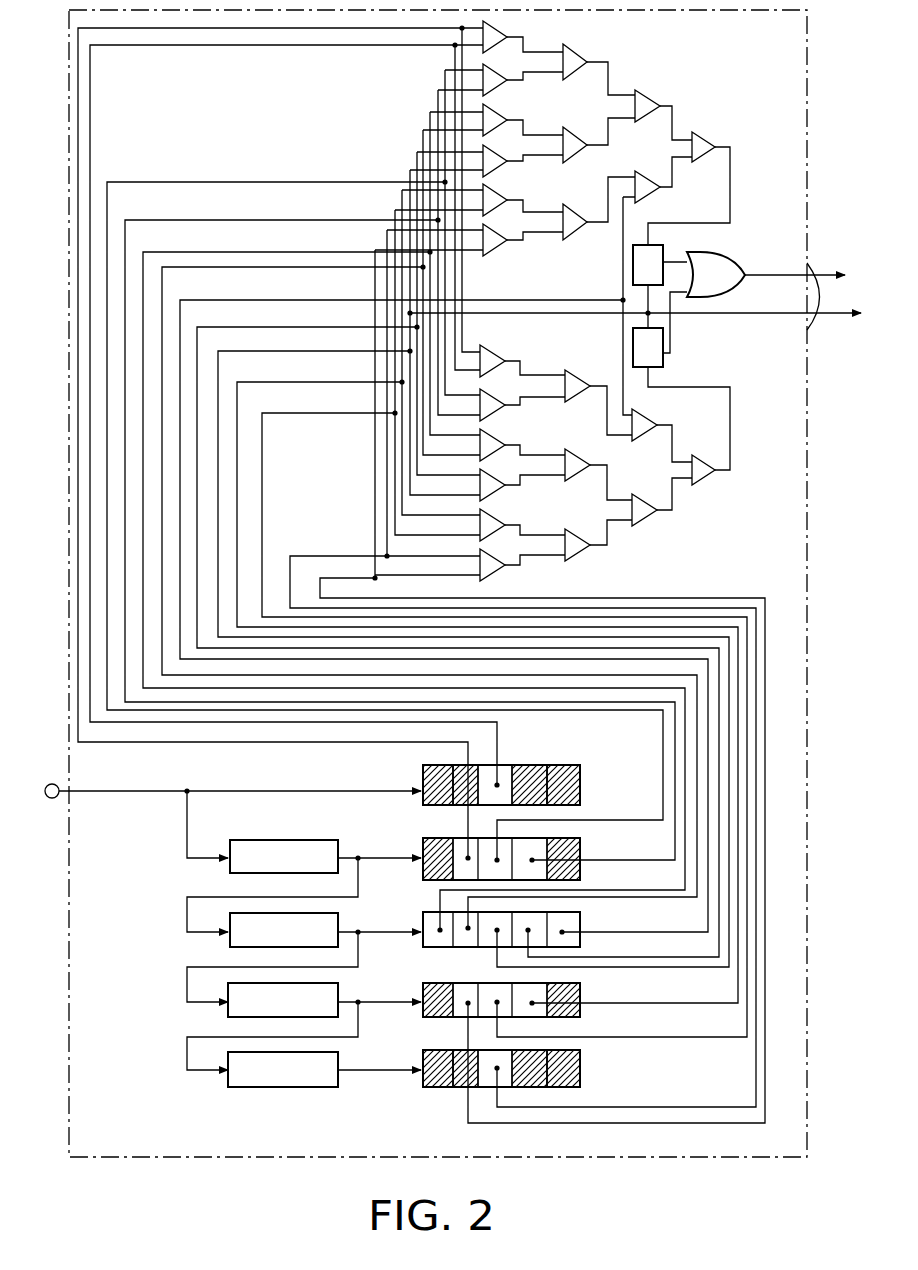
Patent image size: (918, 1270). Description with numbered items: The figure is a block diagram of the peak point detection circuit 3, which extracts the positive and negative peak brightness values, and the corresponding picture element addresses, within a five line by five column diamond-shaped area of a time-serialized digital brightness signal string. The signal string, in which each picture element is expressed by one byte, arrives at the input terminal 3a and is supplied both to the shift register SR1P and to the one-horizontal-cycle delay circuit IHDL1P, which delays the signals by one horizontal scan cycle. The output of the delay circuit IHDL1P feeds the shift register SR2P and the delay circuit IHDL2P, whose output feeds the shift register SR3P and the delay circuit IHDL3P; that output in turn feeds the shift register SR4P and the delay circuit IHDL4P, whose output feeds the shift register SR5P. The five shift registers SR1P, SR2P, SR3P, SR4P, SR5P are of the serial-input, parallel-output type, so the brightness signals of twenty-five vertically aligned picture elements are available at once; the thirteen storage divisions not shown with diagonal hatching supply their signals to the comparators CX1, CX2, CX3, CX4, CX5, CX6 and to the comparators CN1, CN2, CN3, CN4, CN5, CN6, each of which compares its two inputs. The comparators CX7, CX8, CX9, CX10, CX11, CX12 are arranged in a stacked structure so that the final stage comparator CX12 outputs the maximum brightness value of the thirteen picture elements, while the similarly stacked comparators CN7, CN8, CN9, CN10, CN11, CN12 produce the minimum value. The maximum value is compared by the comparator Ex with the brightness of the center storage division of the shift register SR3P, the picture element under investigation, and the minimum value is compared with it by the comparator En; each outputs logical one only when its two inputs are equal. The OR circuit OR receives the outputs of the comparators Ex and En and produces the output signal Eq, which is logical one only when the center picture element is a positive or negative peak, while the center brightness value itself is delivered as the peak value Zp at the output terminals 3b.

The peak point detection circuit 3 is at (68, 185).
The input terminal 3a is at (50, 798).
The output terminals 3b is at (822, 330).
The comparator CX1 is at (503, 30).
The comparator CX2 is at (490, 88).
The comparator CX3 is at (510, 118).
The comparator CX4 is at (500, 168).
The comparator CX5 is at (505, 203).
The comparator CX6 is at (495, 255).
The comparator CX7 is at (588, 50).
The comparator CX8 is at (584, 135).
The comparator CX9 is at (575, 240).
The comparator CX10 is at (650, 95).
The comparator CX11 is at (655, 192).
The comparator CX12 is at (701, 137).
The comparator CN1 is at (492, 347).
The comparator CN2 is at (495, 407).
The comparator CN3 is at (498, 445).
The comparator CN4 is at (500, 490).
The comparator CN5 is at (500, 522).
The comparator CN6 is at (500, 573).
The minimum comparator CN7 is at (582, 370).
The minimum comparator CN8 is at (590, 460).
The minimum comparator CN9 is at (590, 556).
The minimum comparator CN10 is at (640, 420).
The minimum comparator CN11 is at (650, 520).
The minimum comparator CN12 is at (702, 480).
The comparator Ex is at (648, 265).
The comparator En is at (648, 347).
The OR circuit OR is at (716, 274).
The output signal Eq is at (793, 259).
The peak value output Zp is at (635, 332).
The shift register SR1P is at (618, 762).
The shift register SR2P is at (418, 836).
The shift register SR3P is at (418, 917).
The shift register SR4P is at (584, 990).
The shift register SR5P is at (584, 1068).
The 1H delay circuit IHDL1P is at (284, 856).
The 1H delay circuit IHDL2P is at (284, 930).
The 1H delay circuit IHDL3P is at (283, 1000).
The 1H delay circuit IHDL4P is at (283, 1069).